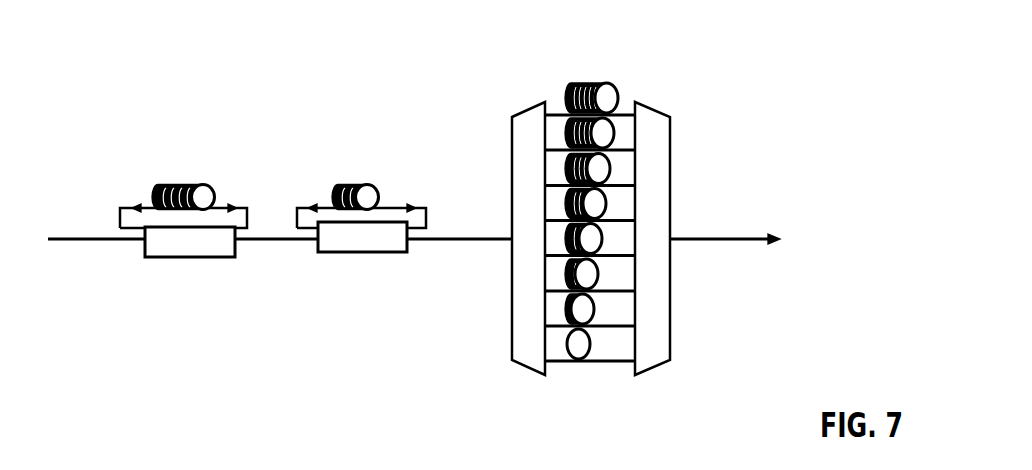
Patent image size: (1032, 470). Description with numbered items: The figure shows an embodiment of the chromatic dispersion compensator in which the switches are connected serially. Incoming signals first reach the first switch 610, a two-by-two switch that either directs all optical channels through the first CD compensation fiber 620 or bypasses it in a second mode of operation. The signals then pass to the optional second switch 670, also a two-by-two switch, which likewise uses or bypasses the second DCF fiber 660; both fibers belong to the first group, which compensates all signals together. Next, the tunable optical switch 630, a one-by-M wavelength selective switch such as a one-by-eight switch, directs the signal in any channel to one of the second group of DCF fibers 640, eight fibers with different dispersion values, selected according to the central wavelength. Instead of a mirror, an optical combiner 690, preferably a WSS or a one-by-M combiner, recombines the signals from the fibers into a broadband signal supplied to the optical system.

The first switch 610 is at (173, 258).
The first CD compensation fiber 620 is at (140, 192).
The tunable optical switch 630 is at (530, 370).
The DCF fibers 640 is at (602, 52).
The second fiber DCF 660 is at (333, 192).
The second switch 670 is at (362, 255).
The optical combiner 690 is at (657, 370).